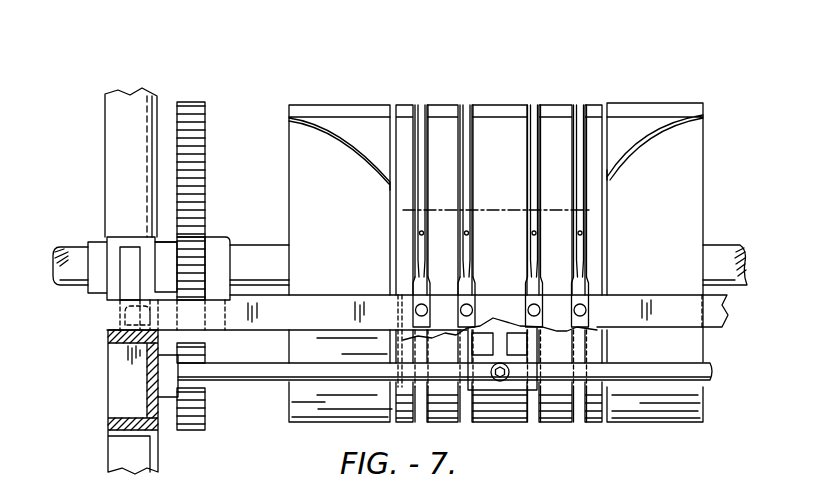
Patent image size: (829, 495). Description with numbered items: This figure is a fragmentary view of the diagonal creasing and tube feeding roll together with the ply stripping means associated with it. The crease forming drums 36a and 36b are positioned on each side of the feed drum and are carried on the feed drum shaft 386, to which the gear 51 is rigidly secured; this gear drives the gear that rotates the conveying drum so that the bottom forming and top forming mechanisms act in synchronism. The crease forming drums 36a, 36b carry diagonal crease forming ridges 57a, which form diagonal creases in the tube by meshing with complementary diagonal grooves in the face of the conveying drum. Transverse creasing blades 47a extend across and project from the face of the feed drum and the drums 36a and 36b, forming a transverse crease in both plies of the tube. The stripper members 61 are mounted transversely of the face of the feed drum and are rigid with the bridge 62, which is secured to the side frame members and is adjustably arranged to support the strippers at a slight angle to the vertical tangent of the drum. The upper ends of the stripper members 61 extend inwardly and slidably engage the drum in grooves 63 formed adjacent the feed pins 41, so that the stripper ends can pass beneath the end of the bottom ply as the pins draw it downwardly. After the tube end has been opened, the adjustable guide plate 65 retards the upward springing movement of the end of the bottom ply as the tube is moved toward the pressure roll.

The crease forming drum 36a is at (292, 152).
The crease forming drum 36b is at (690, 142).
The diagonal crease forming ridge 57a is at (337, 115).
The transverse creasing blade 47a is at (403, 110).
The groove 63 is at (413, 110).
The stripper member 61 is at (583, 270).
The feed pin 41 is at (580, 233).
The gear 51 is at (190, 216).
The feed drum shaft 386 is at (718, 250).
The bridge 62 is at (417, 341).
The adjustable guide plate 65 is at (400, 348).